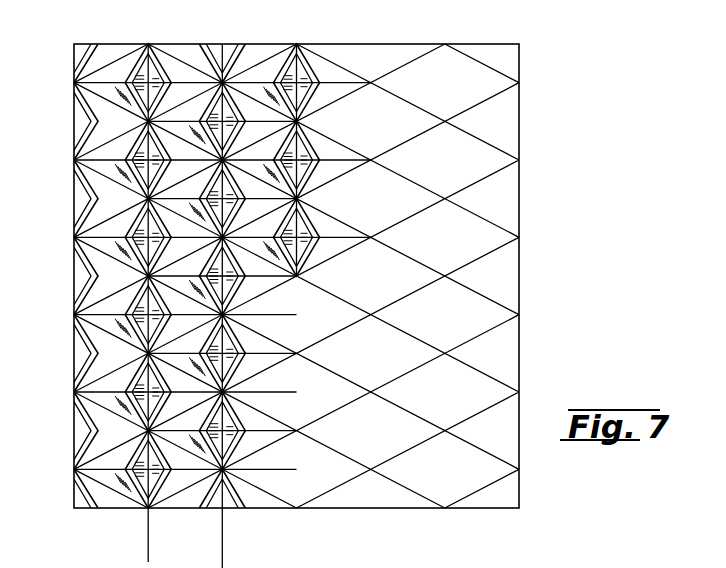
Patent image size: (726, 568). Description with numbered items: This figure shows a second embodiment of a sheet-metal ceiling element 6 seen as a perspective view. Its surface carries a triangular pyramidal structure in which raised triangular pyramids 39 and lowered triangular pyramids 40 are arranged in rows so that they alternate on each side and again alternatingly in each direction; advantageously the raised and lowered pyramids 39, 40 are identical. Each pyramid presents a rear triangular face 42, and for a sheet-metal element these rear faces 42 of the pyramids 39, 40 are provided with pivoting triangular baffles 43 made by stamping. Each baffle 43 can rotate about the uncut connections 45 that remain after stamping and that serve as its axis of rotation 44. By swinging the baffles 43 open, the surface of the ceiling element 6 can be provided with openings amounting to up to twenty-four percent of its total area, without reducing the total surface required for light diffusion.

The ceiling element 6 is at (547, 106).
The raised triangular pyramid 39 is at (103, 63).
The lowered triangular pyramid 40 is at (215, 47).
The rear triangular face 42 is at (162, 68).
The pivoting triangular baffle 43 is at (140, 58).
The axis of rotation 44 is at (304, 76).
The uncut connection 45 is at (148, 55).